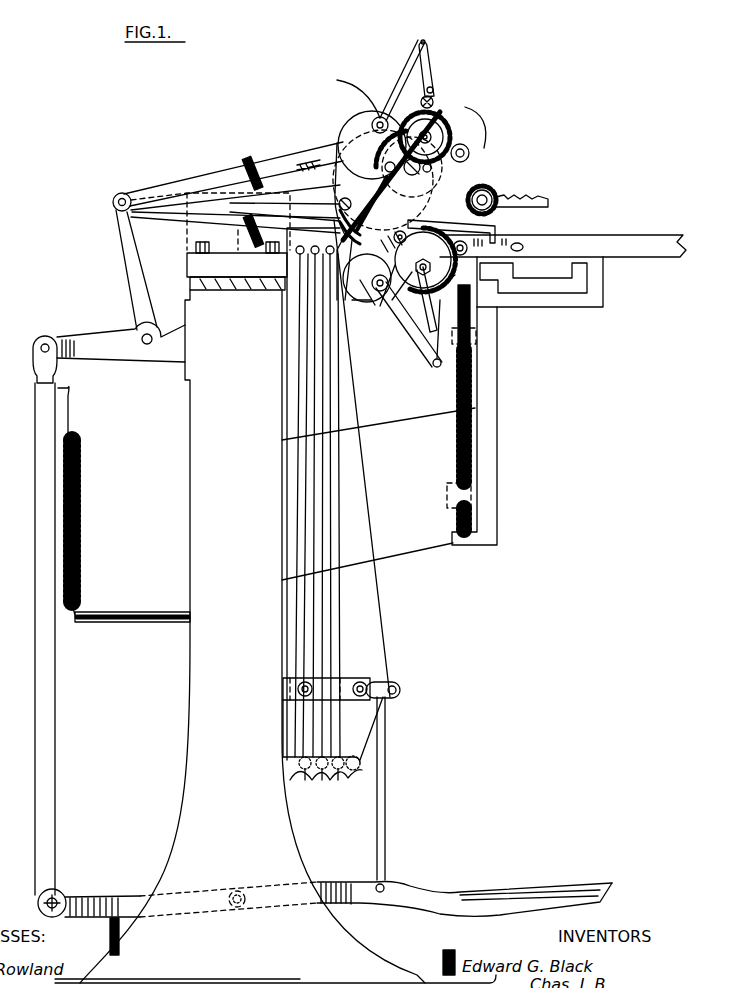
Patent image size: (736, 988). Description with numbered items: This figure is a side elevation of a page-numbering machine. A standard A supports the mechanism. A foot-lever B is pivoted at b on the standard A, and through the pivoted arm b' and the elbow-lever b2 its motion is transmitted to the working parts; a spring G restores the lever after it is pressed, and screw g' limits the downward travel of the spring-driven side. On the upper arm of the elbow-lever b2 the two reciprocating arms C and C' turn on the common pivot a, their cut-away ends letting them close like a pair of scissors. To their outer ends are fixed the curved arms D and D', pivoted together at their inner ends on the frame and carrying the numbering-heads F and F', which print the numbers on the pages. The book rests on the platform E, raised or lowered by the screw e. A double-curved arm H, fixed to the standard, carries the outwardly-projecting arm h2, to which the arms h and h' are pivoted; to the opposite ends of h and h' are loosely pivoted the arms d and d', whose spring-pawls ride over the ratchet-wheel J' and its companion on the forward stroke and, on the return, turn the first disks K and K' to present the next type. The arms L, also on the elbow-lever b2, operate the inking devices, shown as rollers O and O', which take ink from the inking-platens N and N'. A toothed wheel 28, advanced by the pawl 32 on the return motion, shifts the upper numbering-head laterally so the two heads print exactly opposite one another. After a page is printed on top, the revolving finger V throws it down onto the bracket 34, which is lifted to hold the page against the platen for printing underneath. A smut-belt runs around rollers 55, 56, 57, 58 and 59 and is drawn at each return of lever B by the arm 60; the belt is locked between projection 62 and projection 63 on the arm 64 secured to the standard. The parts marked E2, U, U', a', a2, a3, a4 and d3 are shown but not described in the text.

The standard A is at (275, 612).
The foot-lever B is at (502, 890).
The reciprocating arm C is at (228, 242).
The reciprocating arm C' is at (235, 232).
The curved arm D is at (435, 124).
The curved arm D' is at (396, 294).
The platform E is at (632, 244).
The spring E2 is at (475, 121).
The numbering-head F is at (446, 291).
The numbering-head F' is at (424, 284).
The spring G is at (80, 490).
The double-curved arm H is at (356, 126).
The ratchet-wheel J' is at (409, 324).
The first disk K is at (486, 136).
The first disk K' is at (535, 282).
The arm L is at (214, 178).
The inking-platen N is at (369, 214).
The inking-platen N' is at (360, 293).
The ink-roller O is at (447, 164).
The ink-roller O' is at (488, 247).
The clamp U is at (252, 161).
The clamp U' is at (238, 231).
The revolving finger V is at (520, 200).
The pivot a is at (108, 193).
The pivot a' is at (367, 278).
The pivot a2 is at (384, 225).
The pawl bar a3 is at (391, 182).
The pivot a4 is at (377, 168).
The pivot b is at (191, 894).
The pivoted arm b' is at (59, 626).
The elbow-lever b2 is at (88, 340).
The arm d is at (438, 74).
The arm d' is at (380, 293).
The pivot d3 is at (378, 116).
The screw e is at (456, 396).
The screw g' is at (98, 938).
The arm h is at (402, 80).
The arm h' is at (425, 342).
The outwardly-projecting arm h2 is at (346, 90).
The toothed wheel 28 is at (432, 168).
The pawl 32 is at (344, 194).
The bracket 34 is at (498, 228).
The roller 55 is at (327, 776).
The roller 56 is at (340, 778).
The roller 57 is at (324, 778).
The roller 58 is at (303, 779).
The roller 59 is at (395, 719).
The arm 60 is at (384, 775).
The projection 62 is at (350, 680).
The projection 63 is at (362, 684).
The arm 64 is at (330, 688).